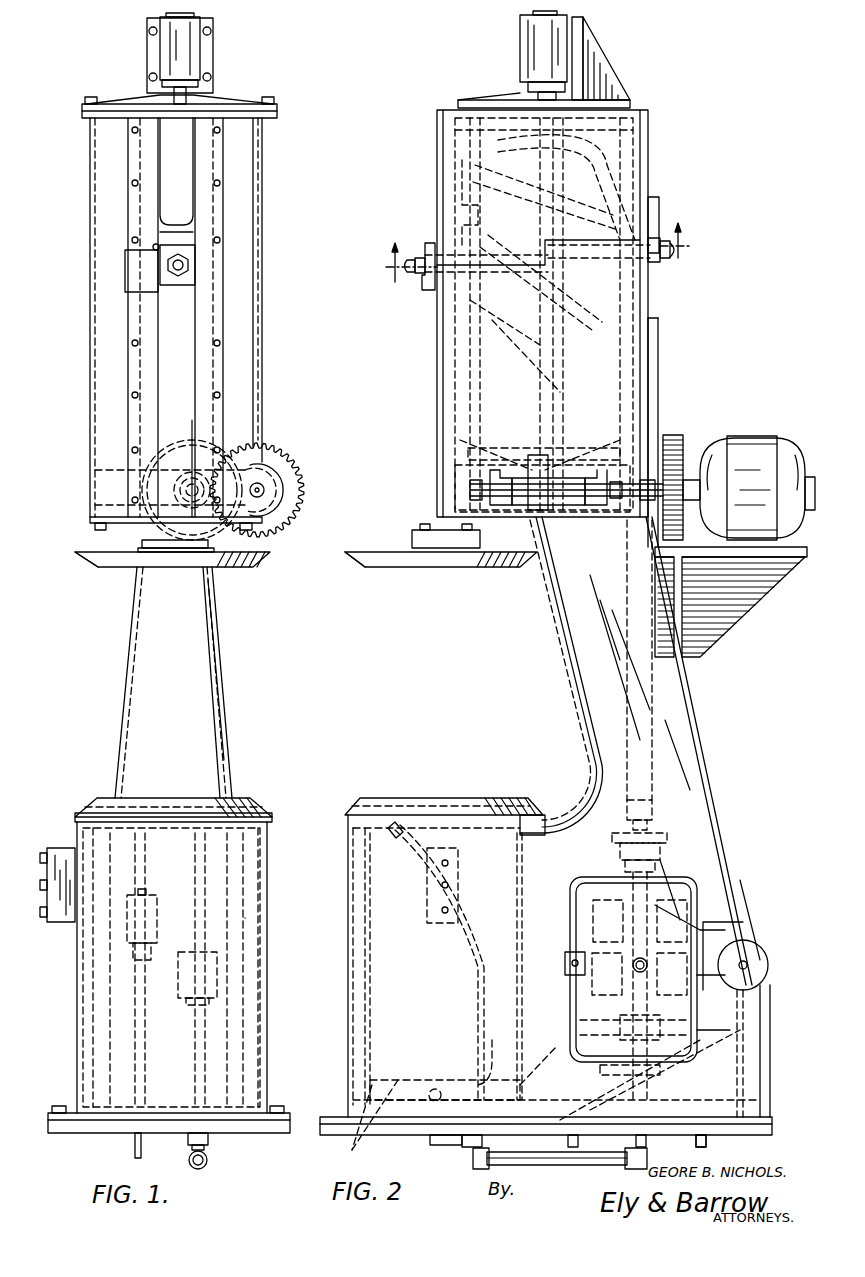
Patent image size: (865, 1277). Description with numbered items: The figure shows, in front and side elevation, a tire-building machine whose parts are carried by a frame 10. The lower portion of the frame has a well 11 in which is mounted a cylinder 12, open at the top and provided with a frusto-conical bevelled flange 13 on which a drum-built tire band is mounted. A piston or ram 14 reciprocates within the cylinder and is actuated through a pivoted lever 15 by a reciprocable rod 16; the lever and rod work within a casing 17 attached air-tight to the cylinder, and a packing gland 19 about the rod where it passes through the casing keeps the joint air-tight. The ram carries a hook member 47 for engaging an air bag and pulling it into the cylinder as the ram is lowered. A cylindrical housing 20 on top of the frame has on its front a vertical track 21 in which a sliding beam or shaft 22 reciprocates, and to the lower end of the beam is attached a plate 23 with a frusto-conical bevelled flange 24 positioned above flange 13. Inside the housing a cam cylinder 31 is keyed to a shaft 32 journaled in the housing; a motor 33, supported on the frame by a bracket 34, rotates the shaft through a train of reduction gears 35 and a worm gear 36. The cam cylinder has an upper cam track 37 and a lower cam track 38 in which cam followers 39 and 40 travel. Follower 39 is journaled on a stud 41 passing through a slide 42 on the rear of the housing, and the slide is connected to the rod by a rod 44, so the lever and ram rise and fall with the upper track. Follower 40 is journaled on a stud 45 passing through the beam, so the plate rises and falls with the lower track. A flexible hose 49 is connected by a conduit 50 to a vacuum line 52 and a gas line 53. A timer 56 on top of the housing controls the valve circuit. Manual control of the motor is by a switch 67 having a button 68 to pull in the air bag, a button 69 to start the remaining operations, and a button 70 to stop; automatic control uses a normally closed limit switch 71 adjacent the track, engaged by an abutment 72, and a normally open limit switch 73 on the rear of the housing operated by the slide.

In FIG. 1, the frame 10 is at (226, 738).
In FIG. 2, the frame 10 is at (710, 778).
In FIG. 1, the well 11 is at (267, 966).
In FIG. 2, the well 11 is at (546, 982).
In FIG. 1, the cylinder 12 is at (245, 918).
In FIG. 2, the cylinder 12 is at (543, 241).
In FIG. 1, the frusto-conical bevelled flange 13 is at (92, 806).
In FIG. 2, the frusto-conical bevelled flange 13 is at (365, 806).
In FIG. 2, the piston or ram 14 is at (362, 1130).
In FIG. 2, the pivoted lever 15 is at (628, 1080).
In FIG. 2, the reciprocable rod 16 is at (665, 872).
In FIG. 2, the casing 17 is at (740, 950).
In FIG. 2, the packing gland 19 is at (667, 848).
In FIG. 1, the cylindrical housing 20 is at (262, 284).
In FIG. 2, the cylindrical housing 20 is at (605, 123).
In FIG. 1, the vertical track 21 is at (213, 220).
In FIG. 2, the vertical track 21 is at (437, 380).
In FIG. 1, the sliding beam or shaft 22 is at (182, 408).
In FIG. 2, the sliding beam or shaft 22 is at (445, 352).
In FIG. 1, the plate 23 is at (215, 358).
In FIG. 2, the plate 23 is at (400, 548).
In FIG. 1, the frusto-conical bevelled flange 24 is at (98, 567).
In FIG. 2, the frusto-conical bevelled flange 24 is at (365, 565).
In FIG. 2, the cam cylinder 31 is at (470, 412).
In FIG. 2, the shaft 32 is at (548, 280).
In FIG. 2, the motor 33 is at (790, 445).
In FIG. 2, the bracket 34 is at (750, 607).
In FIG. 1, the train of reduction gears 35 is at (301, 476).
In FIG. 2, the train of reduction gears 35 is at (672, 435).
In FIG. 2, the worm gear 36 is at (440, 480).
In FIG. 2, the upper cam track 37 is at (605, 165).
In FIG. 2, the lower cam track 38 is at (490, 316).
In FIG. 2, the cam follower 39 is at (540, 204).
In FIG. 2, the cam follower 40 is at (492, 330).
In FIG. 2, the stud 41 is at (664, 262).
In FIG. 2, the slide 42 is at (655, 320).
In FIG. 2, the rod 44 is at (652, 722).
In FIG. 1, the stud 45 is at (186, 263).
In FIG. 2, the stud 45 is at (418, 272).
In FIG. 2, the hook member 47 is at (492, 1040).
In FIG. 2, the flexible hose 49 is at (475, 980).
In FIG. 2, the conduit 50 is at (595, 1162).
In FIG. 2, the vacuum line 52 is at (540, 1141).
In FIG. 2, the gas line 53 is at (706, 1141).
In FIG. 1, the timer 56 is at (203, 52).
In FIG. 2, the timer 56 is at (520, 44).
In FIG. 1, the switch 67 is at (60, 922).
In FIG. 2, the switch 67 is at (450, 930).
In FIG. 1, the button 68 is at (46, 880).
In FIG. 2, the button 68 is at (440, 885).
In FIG. 1, the button 69 is at (44, 853).
In FIG. 2, the button 69 is at (440, 863).
In FIG. 1, the button 70 is at (43, 917).
In FIG. 2, the button 70 is at (440, 910).
In FIG. 1, the normally closed limit switch 71 is at (130, 270).
In FIG. 1, the abutment 72 is at (167, 250).
In FIG. 2, the normally open limit switch 73 is at (657, 200).